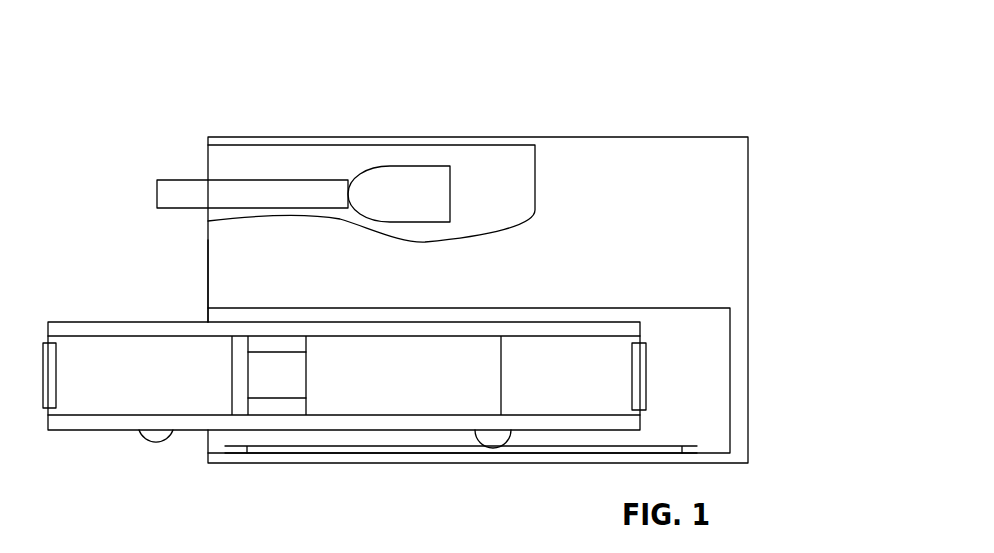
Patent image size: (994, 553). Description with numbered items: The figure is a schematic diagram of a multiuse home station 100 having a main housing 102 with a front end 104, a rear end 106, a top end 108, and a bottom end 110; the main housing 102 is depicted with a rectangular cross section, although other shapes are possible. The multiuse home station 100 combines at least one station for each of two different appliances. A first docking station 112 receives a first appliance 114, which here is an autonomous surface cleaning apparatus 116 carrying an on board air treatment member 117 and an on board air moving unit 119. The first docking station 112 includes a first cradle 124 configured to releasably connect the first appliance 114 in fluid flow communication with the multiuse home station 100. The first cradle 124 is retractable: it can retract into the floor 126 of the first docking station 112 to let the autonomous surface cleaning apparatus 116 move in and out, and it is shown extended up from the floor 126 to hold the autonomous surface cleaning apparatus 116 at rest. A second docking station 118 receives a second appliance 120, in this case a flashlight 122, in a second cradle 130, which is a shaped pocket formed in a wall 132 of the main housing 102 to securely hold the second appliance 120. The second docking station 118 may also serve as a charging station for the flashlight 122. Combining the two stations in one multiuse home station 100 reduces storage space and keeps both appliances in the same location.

The multiuse home station 100 is at (802, 47).
The main housing 102 is at (604, 137).
The front end 104 is at (133, 245).
The rear end 106 is at (800, 274).
The top end 108 is at (470, 70).
The bottom end 110 is at (494, 497).
The first docking station 112 is at (185, 454).
The first appliance 114 is at (585, 295).
The autonomous surface cleaning apparatus 116 is at (622, 323).
The on board air treatment member 117 is at (367, 360).
The second docking station 118 is at (196, 159).
The on board air moving unit 119 is at (262, 358).
The second appliance 120 is at (339, 224).
The flashlight 122 is at (431, 222).
The first cradle 124 is at (325, 447).
The floor 126 is at (394, 455).
The second cradle 130 is at (362, 144).
The wall 132 is at (208, 282).